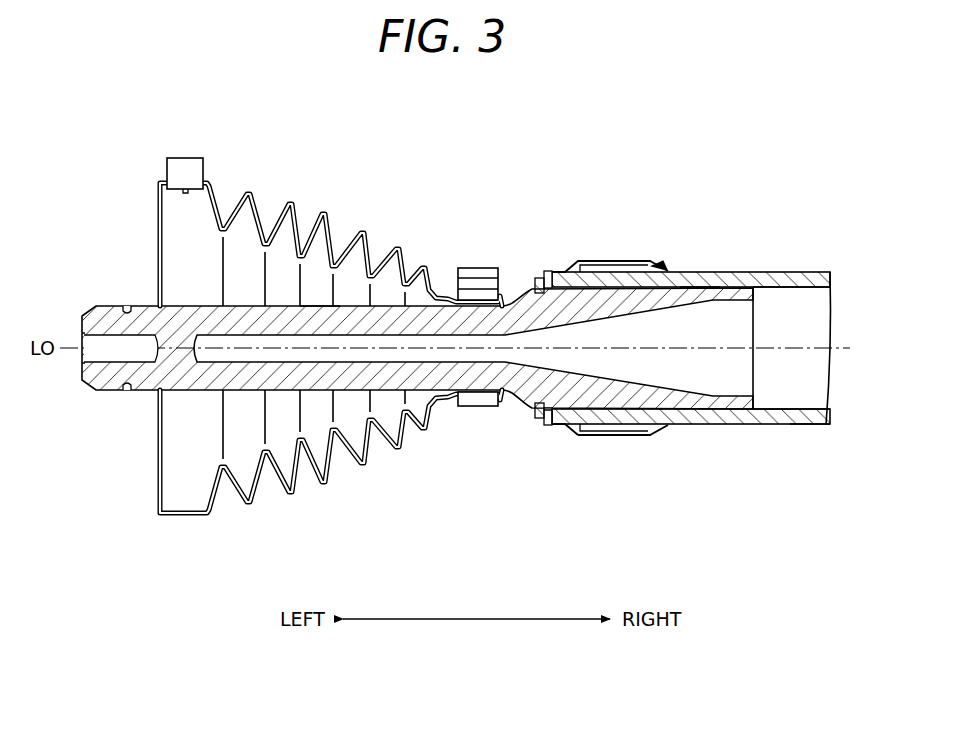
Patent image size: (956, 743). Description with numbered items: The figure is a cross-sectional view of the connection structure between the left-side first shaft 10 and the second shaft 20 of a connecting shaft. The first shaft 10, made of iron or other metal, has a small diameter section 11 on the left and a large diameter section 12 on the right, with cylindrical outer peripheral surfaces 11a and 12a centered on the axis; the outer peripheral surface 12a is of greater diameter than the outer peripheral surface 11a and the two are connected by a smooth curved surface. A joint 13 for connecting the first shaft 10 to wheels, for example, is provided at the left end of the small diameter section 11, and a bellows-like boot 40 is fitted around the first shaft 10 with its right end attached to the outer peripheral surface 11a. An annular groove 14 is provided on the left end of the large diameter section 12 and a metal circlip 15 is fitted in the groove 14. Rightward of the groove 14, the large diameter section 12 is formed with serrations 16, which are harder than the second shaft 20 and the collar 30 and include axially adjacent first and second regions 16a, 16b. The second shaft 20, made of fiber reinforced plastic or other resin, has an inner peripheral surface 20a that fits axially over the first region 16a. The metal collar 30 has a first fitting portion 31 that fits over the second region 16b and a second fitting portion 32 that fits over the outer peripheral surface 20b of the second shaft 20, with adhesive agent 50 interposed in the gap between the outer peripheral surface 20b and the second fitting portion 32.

The first shaft 10 is at (190, 305).
The small diameter section 11 is at (320, 305).
The outer peripheral surface 11a is at (127, 393).
The joint 13 is at (126, 303).
The boot 40 is at (246, 192).
The large diameter section 12 is at (735, 286).
The outer peripheral surface 12a is at (693, 286).
The second shaft 20 is at (777, 271).
The inner peripheral surface 20a is at (770, 408).
The outer peripheral surface 20b is at (792, 426).
The collar 30 is at (592, 262).
The first fitting portion 31 is at (549, 272).
The second fitting portion 32 is at (620, 264).
The adhesive agent 50 is at (662, 262).
The annular groove 14 is at (546, 419).
The circlip 15 is at (540, 418).
The serrations 16 is at (690, 425).
The first region 16a is at (632, 425).
The second region 16b is at (567, 428).